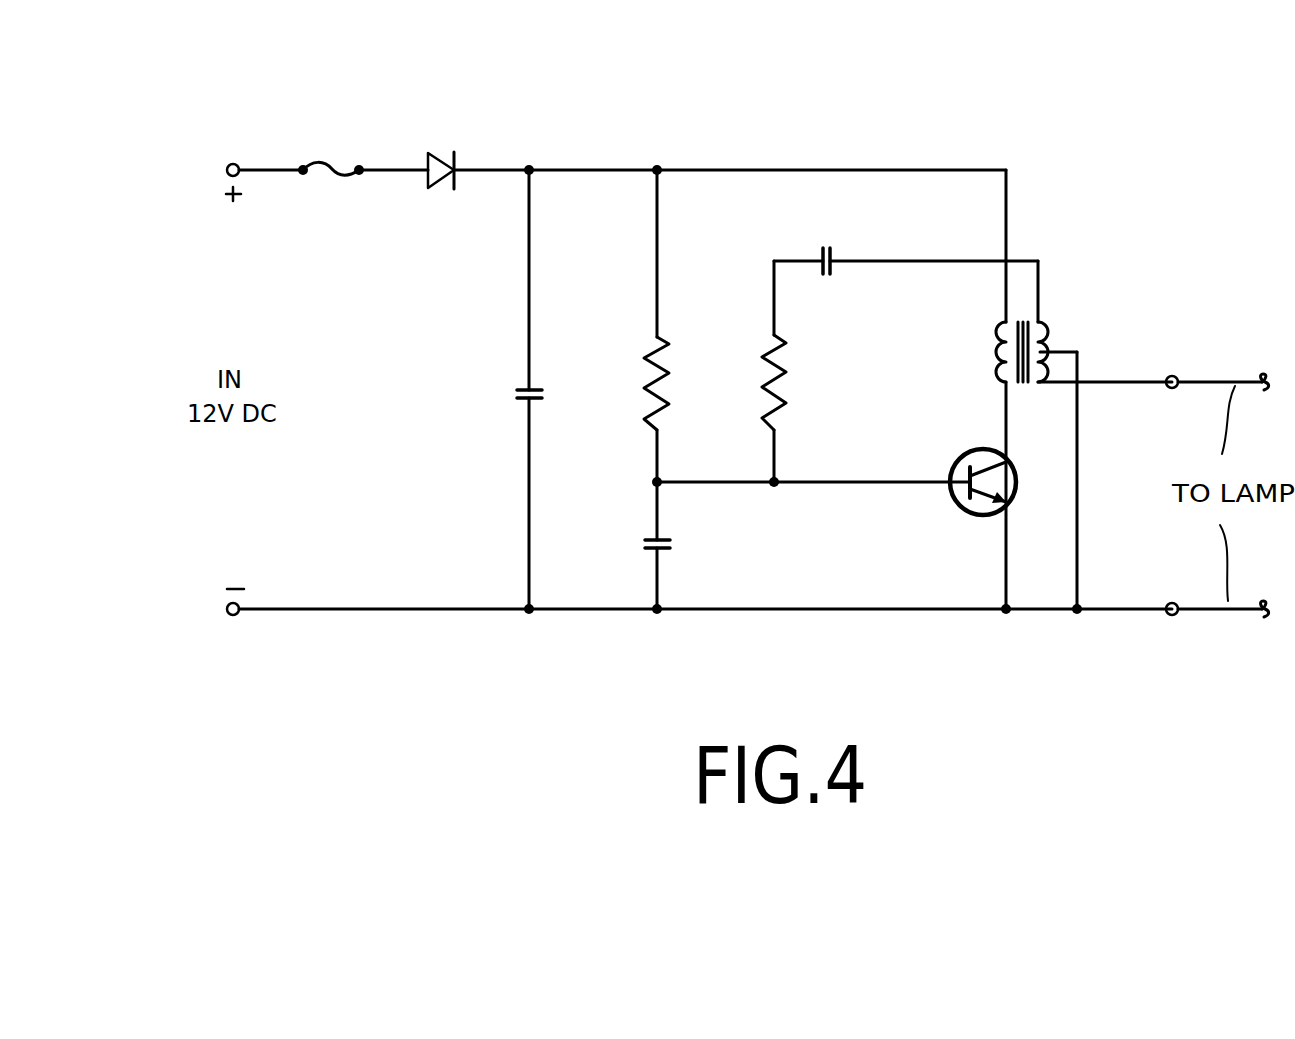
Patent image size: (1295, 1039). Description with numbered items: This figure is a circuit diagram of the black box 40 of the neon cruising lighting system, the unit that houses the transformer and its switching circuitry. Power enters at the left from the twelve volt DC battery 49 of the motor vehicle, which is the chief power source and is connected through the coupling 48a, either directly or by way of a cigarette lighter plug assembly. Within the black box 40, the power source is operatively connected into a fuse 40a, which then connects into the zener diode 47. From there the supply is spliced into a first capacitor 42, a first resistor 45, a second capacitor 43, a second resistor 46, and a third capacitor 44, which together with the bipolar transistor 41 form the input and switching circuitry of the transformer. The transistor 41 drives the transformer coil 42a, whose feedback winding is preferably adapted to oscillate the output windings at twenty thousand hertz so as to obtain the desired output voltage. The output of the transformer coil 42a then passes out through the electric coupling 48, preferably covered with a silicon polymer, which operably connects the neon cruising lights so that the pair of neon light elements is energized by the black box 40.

The black box 40 is at (712, 133).
The fuse 40a is at (338, 168).
The bipolar transistor 41 is at (968, 512).
The first capacitor 42 is at (520, 389).
The transformer coil 42a is at (1038, 352).
The second capacitor 43 is at (838, 256).
The third capacitor 44 is at (668, 550).
The first resistor 45 is at (647, 383).
The second resistor 46 is at (764, 383).
The zener diode 47 is at (440, 154).
The electric coupling 48 is at (1176, 375).
The coupling 48a is at (258, 169).
The DC current battery 49 is at (237, 366).